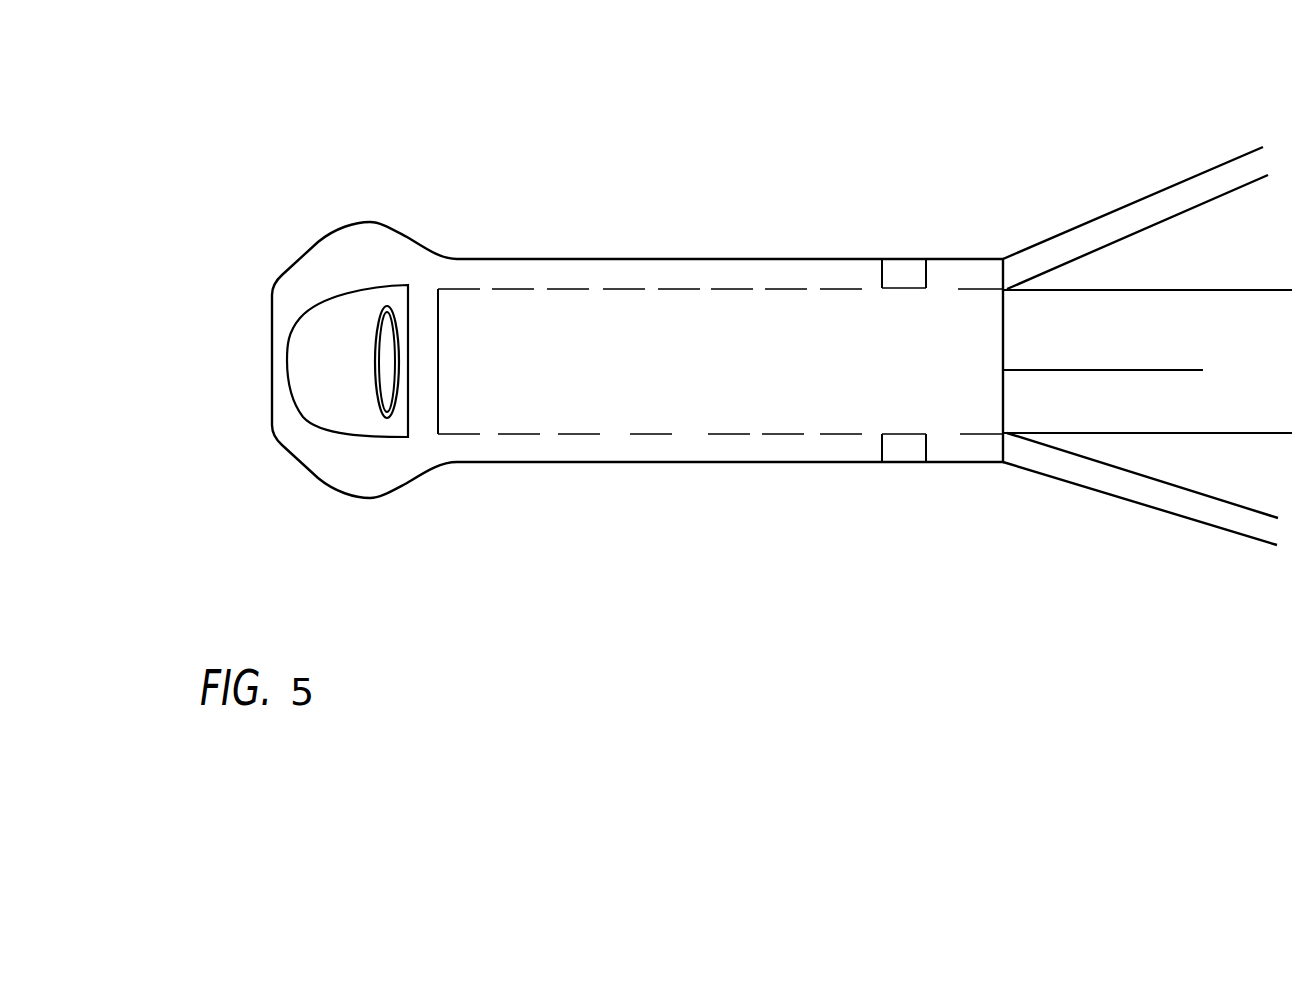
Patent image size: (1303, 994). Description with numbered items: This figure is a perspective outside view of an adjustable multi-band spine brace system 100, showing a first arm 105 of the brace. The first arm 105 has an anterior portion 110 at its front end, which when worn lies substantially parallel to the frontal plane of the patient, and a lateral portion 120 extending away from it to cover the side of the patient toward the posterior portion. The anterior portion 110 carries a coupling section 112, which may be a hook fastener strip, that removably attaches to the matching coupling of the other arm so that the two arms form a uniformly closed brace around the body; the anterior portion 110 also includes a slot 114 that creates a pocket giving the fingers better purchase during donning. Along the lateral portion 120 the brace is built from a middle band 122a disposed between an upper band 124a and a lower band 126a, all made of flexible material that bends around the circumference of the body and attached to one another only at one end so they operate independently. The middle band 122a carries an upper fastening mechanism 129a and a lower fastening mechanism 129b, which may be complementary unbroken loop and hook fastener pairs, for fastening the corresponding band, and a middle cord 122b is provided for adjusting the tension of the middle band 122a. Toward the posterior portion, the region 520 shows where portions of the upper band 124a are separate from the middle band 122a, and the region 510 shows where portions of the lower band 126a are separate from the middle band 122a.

The adjustable multi-band spine brace system 100 is at (613, 130).
The first arm 105 is at (558, 242).
The anterior portion 110 is at (298, 226).
The coupling section 112 is at (362, 391).
The slot 114 is at (375, 353).
The lateral portion 120 is at (625, 499).
The middle band 122a is at (717, 393).
The middle cord 122b is at (1137, 370).
The upper band 124a is at (817, 270).
The lower band 126a is at (816, 450).
The upper fastening mechanism 129a is at (905, 267).
The lower fastening mechanism 129b is at (903, 453).
The region 510 is at (1095, 464).
The region 520 is at (1067, 238).